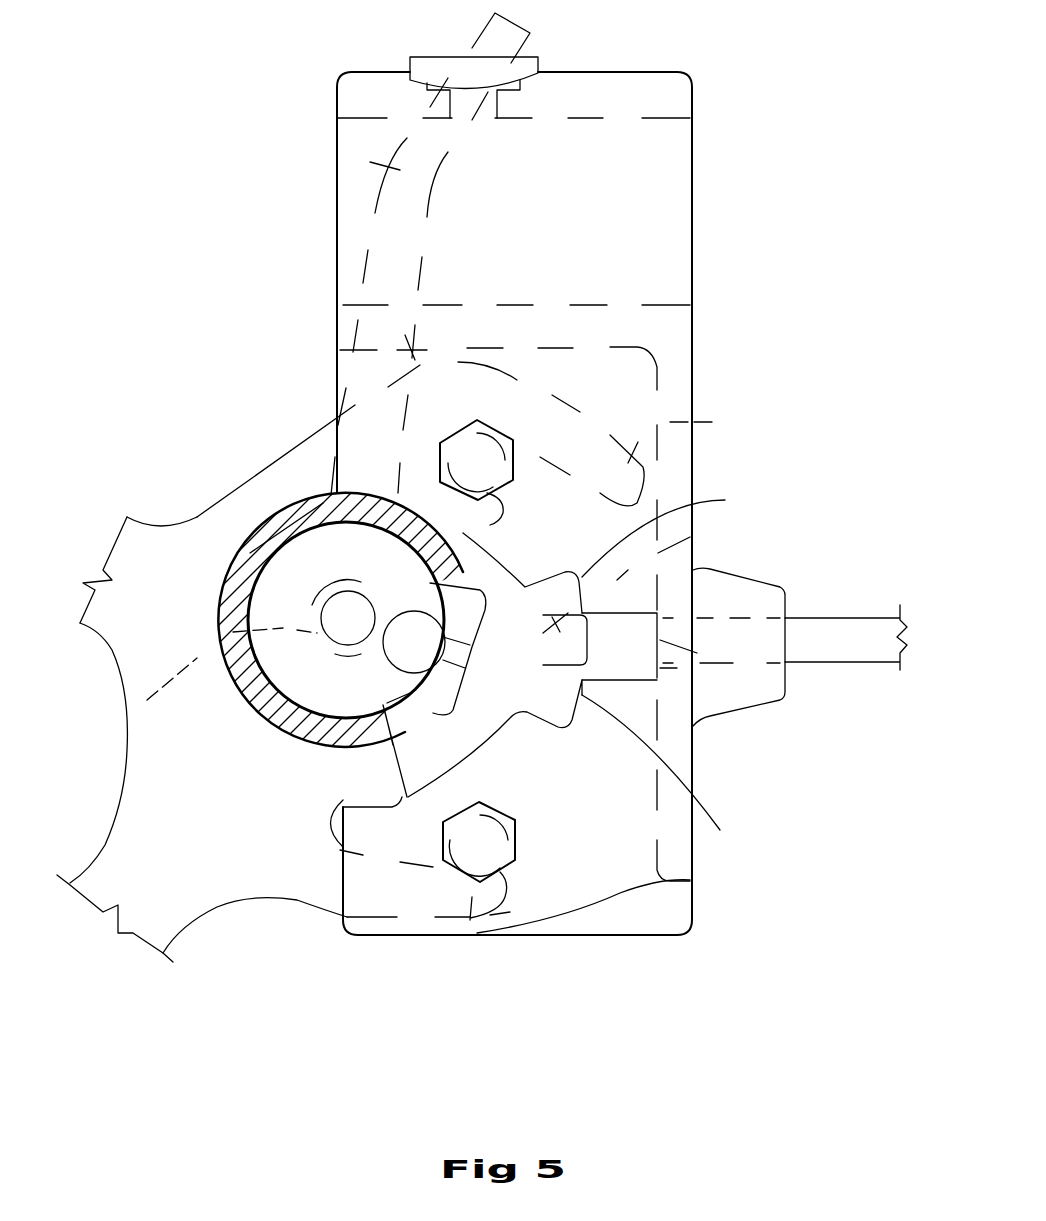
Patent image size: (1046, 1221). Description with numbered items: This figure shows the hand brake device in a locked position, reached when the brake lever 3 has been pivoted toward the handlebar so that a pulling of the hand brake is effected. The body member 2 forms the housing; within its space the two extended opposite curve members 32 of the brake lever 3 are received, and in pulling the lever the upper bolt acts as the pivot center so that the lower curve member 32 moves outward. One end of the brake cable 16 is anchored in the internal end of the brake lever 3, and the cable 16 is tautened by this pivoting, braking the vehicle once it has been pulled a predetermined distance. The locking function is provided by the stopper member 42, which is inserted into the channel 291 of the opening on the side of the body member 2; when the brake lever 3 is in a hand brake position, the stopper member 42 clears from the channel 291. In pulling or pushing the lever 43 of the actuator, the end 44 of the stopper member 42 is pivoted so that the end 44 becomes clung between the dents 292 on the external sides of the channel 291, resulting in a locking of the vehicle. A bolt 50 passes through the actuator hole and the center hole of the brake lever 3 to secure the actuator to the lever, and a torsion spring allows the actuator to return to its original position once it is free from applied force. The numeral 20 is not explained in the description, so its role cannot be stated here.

The body member 2 is at (653, 217).
The brake lever 3 is at (193, 552).
The brake cable 16 is at (830, 648).
The bore 20 is at (773, 668).
The curve members 32 is at (752, 407).
The stopper member 42 is at (725, 523).
The lever of actuator 43 is at (332, 152).
The end of stopper member 44 is at (773, 728).
The bolt 50 is at (113, 712).
The channel 291 is at (637, 633).
The dents 292 is at (725, 500).